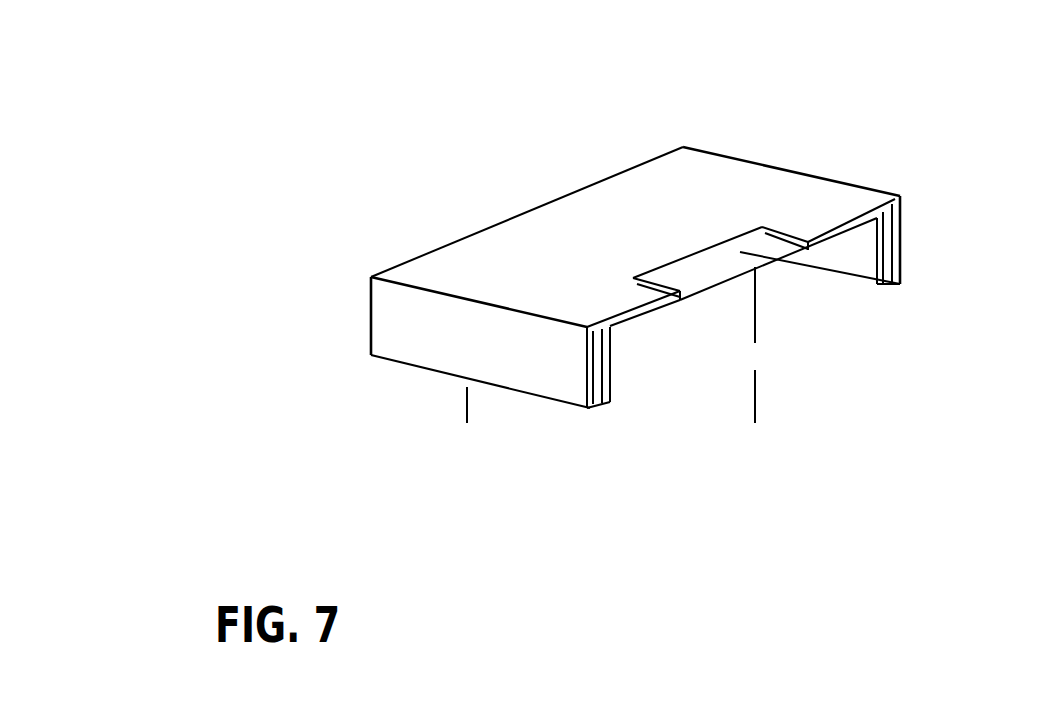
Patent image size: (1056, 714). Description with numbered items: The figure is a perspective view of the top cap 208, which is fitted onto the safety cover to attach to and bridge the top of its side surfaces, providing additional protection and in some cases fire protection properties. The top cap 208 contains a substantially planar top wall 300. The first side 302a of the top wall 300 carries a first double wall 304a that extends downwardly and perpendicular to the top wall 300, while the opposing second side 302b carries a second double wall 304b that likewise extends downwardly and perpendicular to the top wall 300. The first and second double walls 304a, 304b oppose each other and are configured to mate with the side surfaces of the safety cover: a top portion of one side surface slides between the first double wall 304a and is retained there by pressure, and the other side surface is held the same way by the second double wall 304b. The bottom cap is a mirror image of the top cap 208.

The top cap 208 is at (484, 131).
The top wall 300 is at (633, 207).
The first side 302a is at (417, 287).
The second side 302b is at (757, 163).
The first double wall 304a is at (407, 333).
The second double wall 304b is at (857, 243).